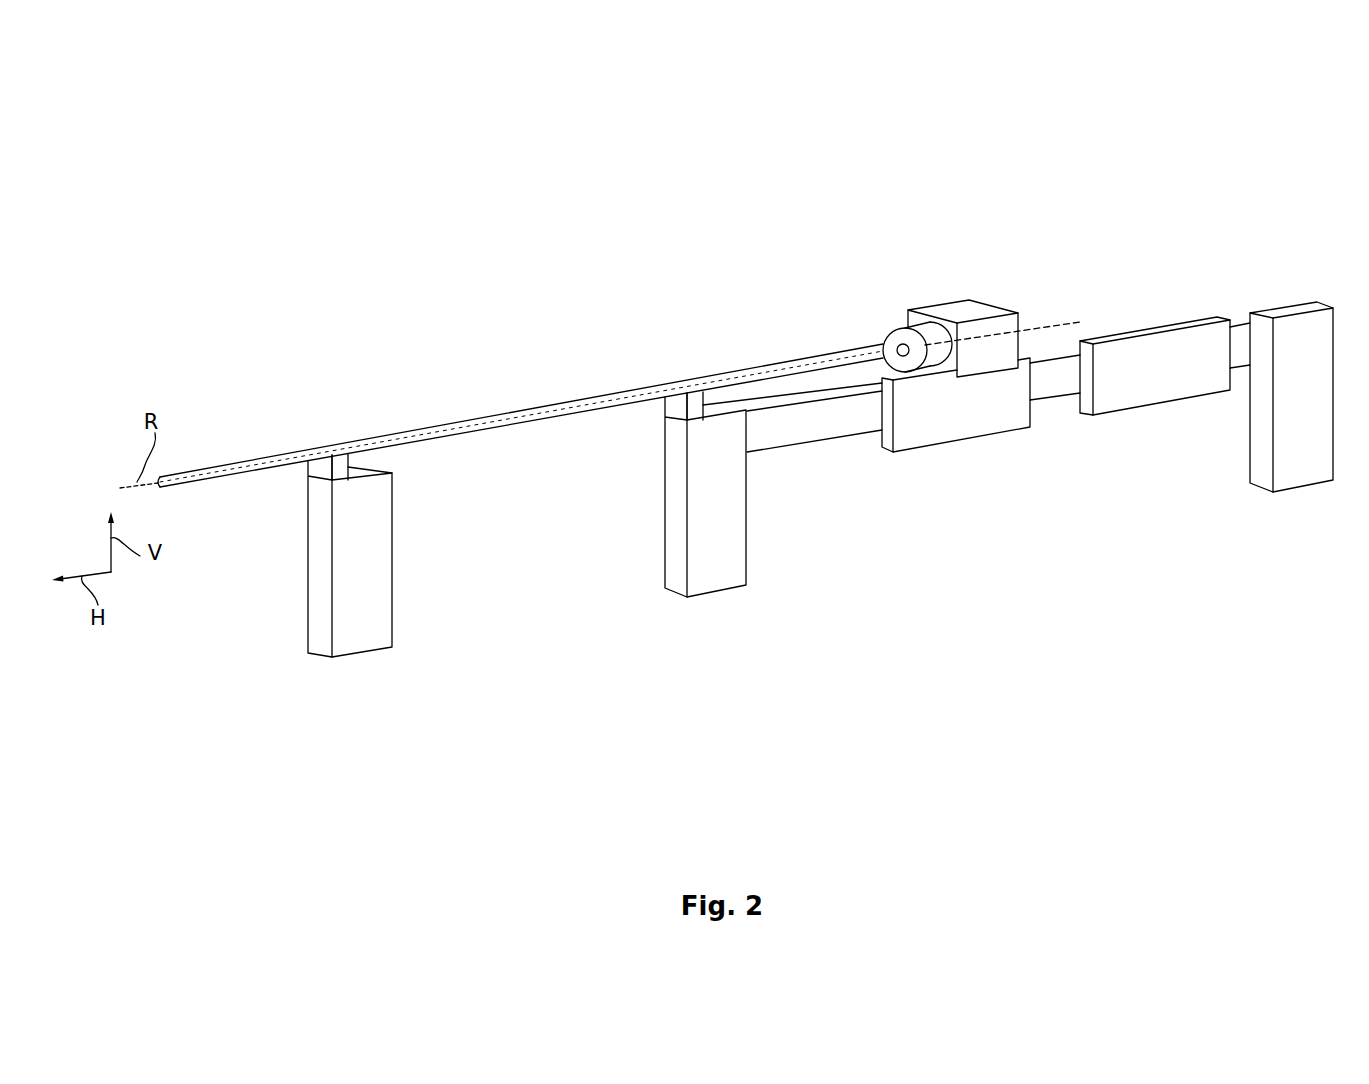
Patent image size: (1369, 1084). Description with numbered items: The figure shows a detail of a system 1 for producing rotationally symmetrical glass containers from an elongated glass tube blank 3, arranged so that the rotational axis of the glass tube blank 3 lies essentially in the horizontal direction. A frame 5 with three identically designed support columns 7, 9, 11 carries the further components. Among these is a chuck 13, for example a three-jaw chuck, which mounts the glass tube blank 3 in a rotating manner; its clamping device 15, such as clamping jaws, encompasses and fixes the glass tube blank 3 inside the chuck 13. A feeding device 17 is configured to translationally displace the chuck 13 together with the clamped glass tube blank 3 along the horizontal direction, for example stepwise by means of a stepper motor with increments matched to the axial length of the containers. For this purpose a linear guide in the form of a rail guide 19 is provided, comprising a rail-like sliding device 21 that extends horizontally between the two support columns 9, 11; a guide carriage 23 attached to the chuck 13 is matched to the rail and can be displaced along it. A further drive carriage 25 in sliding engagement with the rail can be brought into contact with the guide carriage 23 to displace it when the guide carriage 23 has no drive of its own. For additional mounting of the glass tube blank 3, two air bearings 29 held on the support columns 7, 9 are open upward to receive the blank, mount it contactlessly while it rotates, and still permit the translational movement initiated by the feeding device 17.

The system 1 is at (1090, 177).
The glass tube blank 3 is at (795, 359).
The frame 5 is at (315, 667).
The support column 7 is at (363, 644).
The support column 9 is at (733, 578).
The support column 11 is at (1302, 462).
The chuck 13 is at (963, 298).
The clamping device 15 is at (927, 309).
The feeding device 17 is at (1042, 442).
The rail guide 19 is at (858, 445).
The rail-like sliding device 21 is at (812, 430).
The guide carriage 23 is at (982, 425).
The drive carriage 25 is at (1158, 378).
The air bearing 29 is at (353, 460).